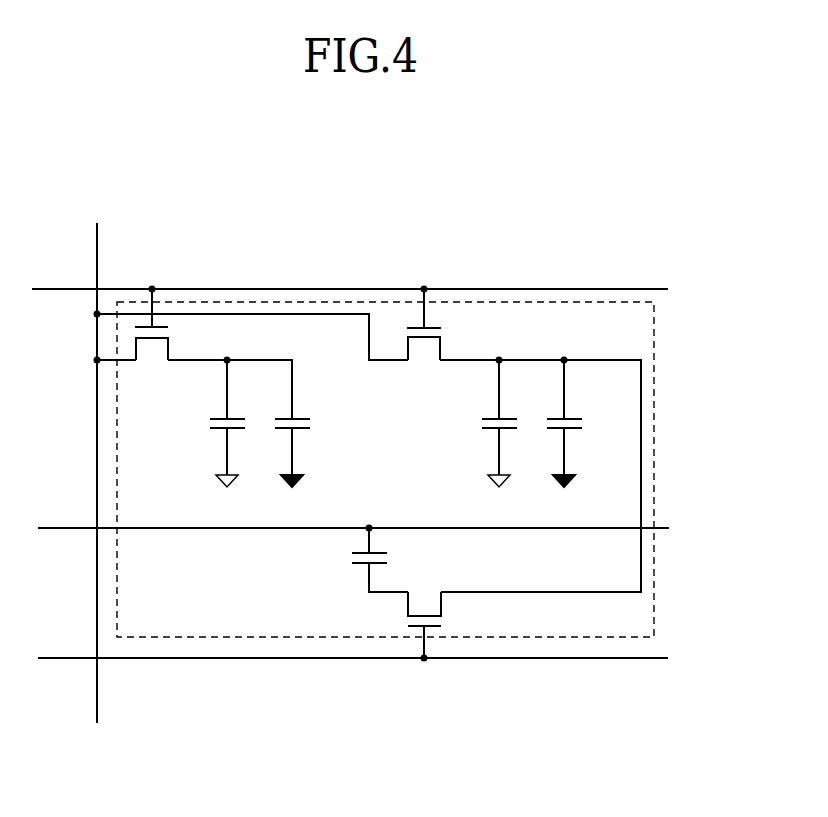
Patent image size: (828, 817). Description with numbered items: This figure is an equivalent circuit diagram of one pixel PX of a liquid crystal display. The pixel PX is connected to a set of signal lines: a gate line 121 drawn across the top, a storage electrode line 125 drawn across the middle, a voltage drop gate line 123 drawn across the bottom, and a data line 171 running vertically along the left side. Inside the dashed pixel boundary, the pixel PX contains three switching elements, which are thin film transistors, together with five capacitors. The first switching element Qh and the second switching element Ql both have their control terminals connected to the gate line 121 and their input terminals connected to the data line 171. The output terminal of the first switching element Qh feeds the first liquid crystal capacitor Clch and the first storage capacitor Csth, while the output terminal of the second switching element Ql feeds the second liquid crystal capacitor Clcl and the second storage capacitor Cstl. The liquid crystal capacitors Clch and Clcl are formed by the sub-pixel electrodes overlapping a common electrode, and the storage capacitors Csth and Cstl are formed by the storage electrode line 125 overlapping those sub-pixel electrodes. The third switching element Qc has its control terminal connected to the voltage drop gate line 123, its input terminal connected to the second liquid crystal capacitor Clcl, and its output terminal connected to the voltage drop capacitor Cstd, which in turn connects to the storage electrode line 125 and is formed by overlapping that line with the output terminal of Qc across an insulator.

The data line 171 is at (97, 243).
The gate line 121 is at (371, 289).
The storage electrode line 125 is at (375, 529).
The voltage drop gate line 123 is at (375, 659).
The pixel PX is at (262, 302).
The first switching element Qh is at (151, 338).
The second switching element Ql is at (424, 339).
The third switching element Qc is at (424, 613).
The first liquid crystal capacitor Clch is at (201, 448).
The first storage capacitor Csth is at (320, 448).
The second liquid crystal capacitor Clcl is at (475, 448).
The second storage capacitor Cstl is at (589, 448).
The voltage drop capacitor Cstd is at (342, 559).